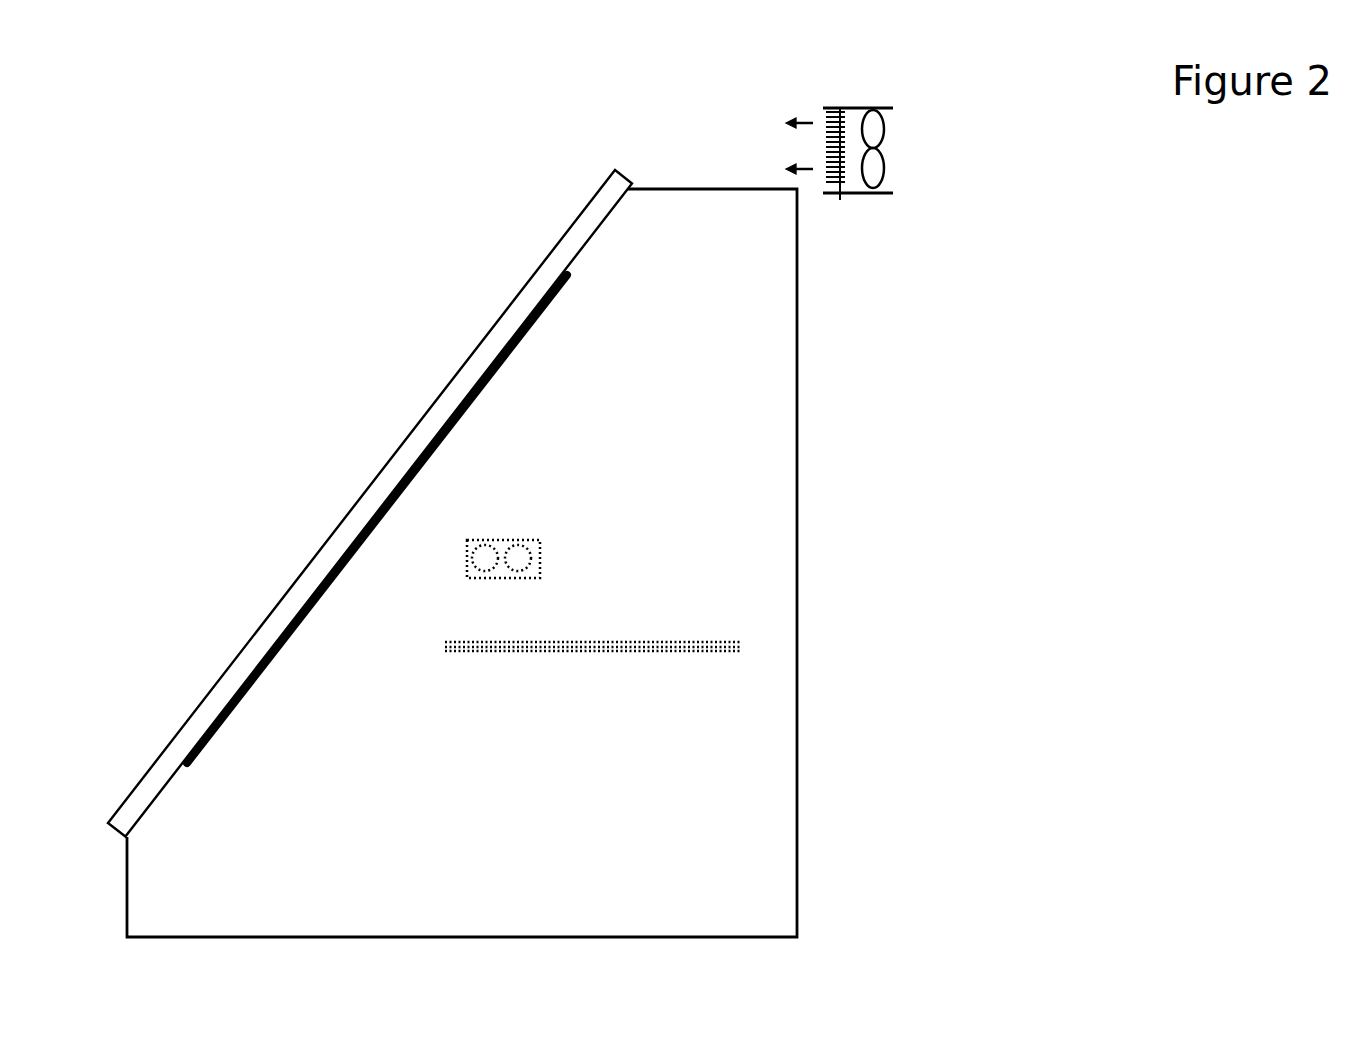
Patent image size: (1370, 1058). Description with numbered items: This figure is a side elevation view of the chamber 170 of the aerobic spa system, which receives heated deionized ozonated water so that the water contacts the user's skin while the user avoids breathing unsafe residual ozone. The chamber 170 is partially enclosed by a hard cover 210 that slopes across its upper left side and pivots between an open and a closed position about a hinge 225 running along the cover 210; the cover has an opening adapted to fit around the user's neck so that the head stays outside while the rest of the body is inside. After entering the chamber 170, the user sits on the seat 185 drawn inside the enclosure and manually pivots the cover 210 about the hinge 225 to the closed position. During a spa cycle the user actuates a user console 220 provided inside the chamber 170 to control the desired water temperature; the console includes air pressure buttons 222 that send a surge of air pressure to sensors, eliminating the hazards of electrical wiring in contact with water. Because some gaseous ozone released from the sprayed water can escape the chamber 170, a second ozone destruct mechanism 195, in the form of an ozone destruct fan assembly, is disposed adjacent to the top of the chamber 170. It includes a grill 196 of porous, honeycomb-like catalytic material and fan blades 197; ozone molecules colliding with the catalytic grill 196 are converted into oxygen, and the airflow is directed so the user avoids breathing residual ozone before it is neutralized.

The chamber 170 is at (782, 590).
The seat 185 is at (607, 650).
The second ozone destruct mechanism 195 is at (889, 194).
The grill 196 is at (852, 201).
The fan blades 197 is at (880, 131).
The hard cover 210 is at (422, 415).
The user console 220 is at (523, 538).
The air pressure buttons 222 is at (480, 562).
The hinge 225 is at (513, 357).